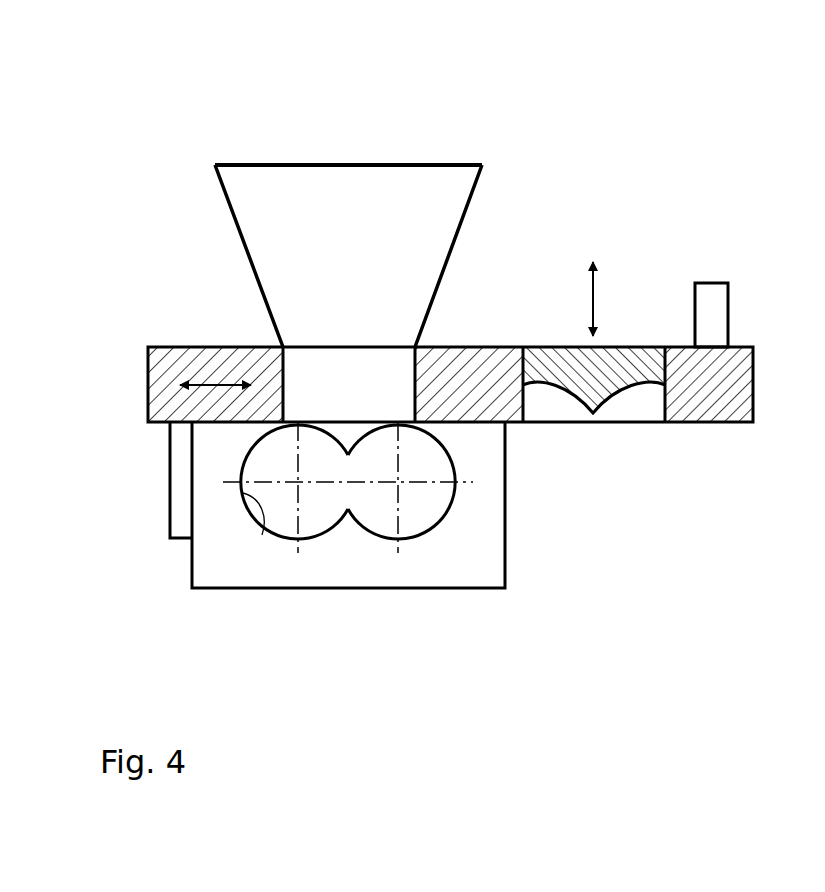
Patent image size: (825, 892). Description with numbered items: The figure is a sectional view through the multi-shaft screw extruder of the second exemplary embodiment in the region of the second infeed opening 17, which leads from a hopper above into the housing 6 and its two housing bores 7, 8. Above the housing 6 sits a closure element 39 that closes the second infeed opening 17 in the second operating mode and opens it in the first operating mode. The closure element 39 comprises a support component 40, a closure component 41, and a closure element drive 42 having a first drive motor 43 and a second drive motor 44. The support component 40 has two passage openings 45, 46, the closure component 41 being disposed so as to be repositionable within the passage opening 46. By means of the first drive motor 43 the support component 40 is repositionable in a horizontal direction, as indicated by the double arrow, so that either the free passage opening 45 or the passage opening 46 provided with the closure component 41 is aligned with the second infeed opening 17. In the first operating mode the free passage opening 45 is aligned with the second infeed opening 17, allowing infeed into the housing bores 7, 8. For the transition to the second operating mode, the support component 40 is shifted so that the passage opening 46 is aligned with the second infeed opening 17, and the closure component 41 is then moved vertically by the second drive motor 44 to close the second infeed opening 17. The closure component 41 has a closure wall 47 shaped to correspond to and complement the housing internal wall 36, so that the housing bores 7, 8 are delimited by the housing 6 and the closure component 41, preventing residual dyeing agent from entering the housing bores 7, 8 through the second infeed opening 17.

The housing 6 is at (341, 591).
The housing bore 7 is at (283, 527).
The housing bore 8 is at (403, 527).
The second infeed opening 17 is at (379, 413).
The housing internal wall 36 is at (262, 535).
The closure element 39 is at (764, 364).
The support component 40 is at (720, 415).
The closure component 41 is at (567, 347).
The closure element drive 42 is at (742, 297).
The first drive motor 43 is at (176, 533).
The second drive motor 44 is at (711, 292).
The passage opening 45 is at (361, 358).
The passage opening 46 is at (648, 415).
The closure wall 47 is at (572, 398).